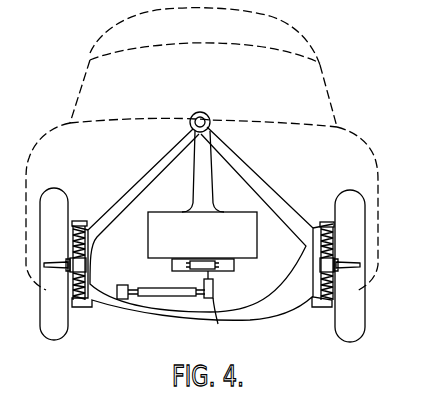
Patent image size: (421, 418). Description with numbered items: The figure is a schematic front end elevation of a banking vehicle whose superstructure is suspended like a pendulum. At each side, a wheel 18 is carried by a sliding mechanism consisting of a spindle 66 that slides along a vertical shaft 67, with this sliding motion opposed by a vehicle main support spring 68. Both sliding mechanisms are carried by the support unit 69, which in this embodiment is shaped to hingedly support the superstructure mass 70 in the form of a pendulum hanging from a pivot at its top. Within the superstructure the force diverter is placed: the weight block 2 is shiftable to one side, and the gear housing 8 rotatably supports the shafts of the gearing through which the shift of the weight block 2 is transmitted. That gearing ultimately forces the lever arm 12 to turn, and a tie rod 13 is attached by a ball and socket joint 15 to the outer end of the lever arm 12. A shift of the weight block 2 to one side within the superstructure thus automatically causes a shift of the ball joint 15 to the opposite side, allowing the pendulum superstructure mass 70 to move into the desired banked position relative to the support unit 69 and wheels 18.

The weight block 2 is at (198, 259).
The gear housing 8 is at (234, 271).
The lever arm 12 is at (213, 283).
The tie rod 13 is at (157, 288).
The ball and socket joint 15 is at (224, 317).
The wheel 18 is at (70, 170).
The spindle 66 is at (68, 260).
The vertical shaft 67 is at (74, 232).
The vehicle main support spring 68 is at (78, 229).
The support unit 69 is at (266, 182).
The superstructure mass 70 is at (213, 191).